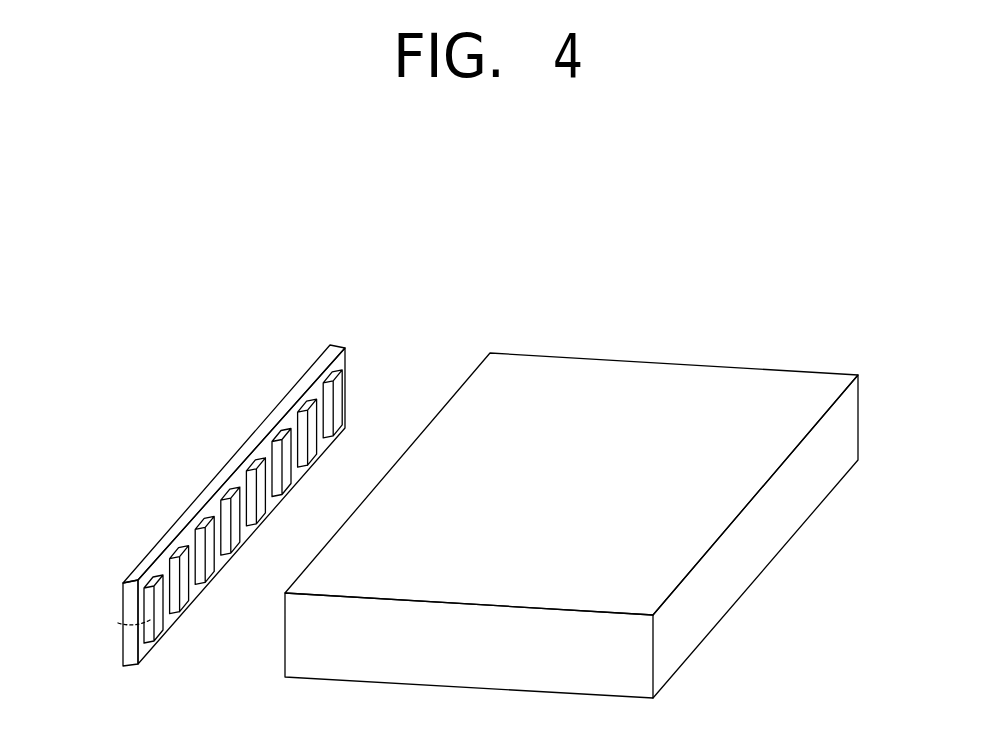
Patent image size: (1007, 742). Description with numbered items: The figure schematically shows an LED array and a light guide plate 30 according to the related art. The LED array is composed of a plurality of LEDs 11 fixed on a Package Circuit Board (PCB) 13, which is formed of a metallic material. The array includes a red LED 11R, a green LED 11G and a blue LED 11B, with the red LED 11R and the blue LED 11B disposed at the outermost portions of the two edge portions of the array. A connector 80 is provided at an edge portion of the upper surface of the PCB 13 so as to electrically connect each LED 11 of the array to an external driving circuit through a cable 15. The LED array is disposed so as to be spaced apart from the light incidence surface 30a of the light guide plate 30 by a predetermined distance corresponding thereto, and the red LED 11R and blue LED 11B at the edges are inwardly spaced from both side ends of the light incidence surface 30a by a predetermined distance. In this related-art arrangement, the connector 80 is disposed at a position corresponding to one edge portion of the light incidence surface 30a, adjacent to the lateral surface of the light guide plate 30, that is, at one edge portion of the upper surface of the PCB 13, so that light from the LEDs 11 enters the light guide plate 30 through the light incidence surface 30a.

The LED 11 is at (252, 362).
The red LED 11R is at (174, 543).
The green LED 11G is at (207, 522).
The blue LED 11B is at (233, 492).
The Package Circuit Board (PCB) 13 is at (293, 392).
The cable 15 is at (118, 623).
The light guide plate 30 is at (647, 392).
The light incidence surface 30a is at (452, 396).
The connector 80 is at (157, 590).